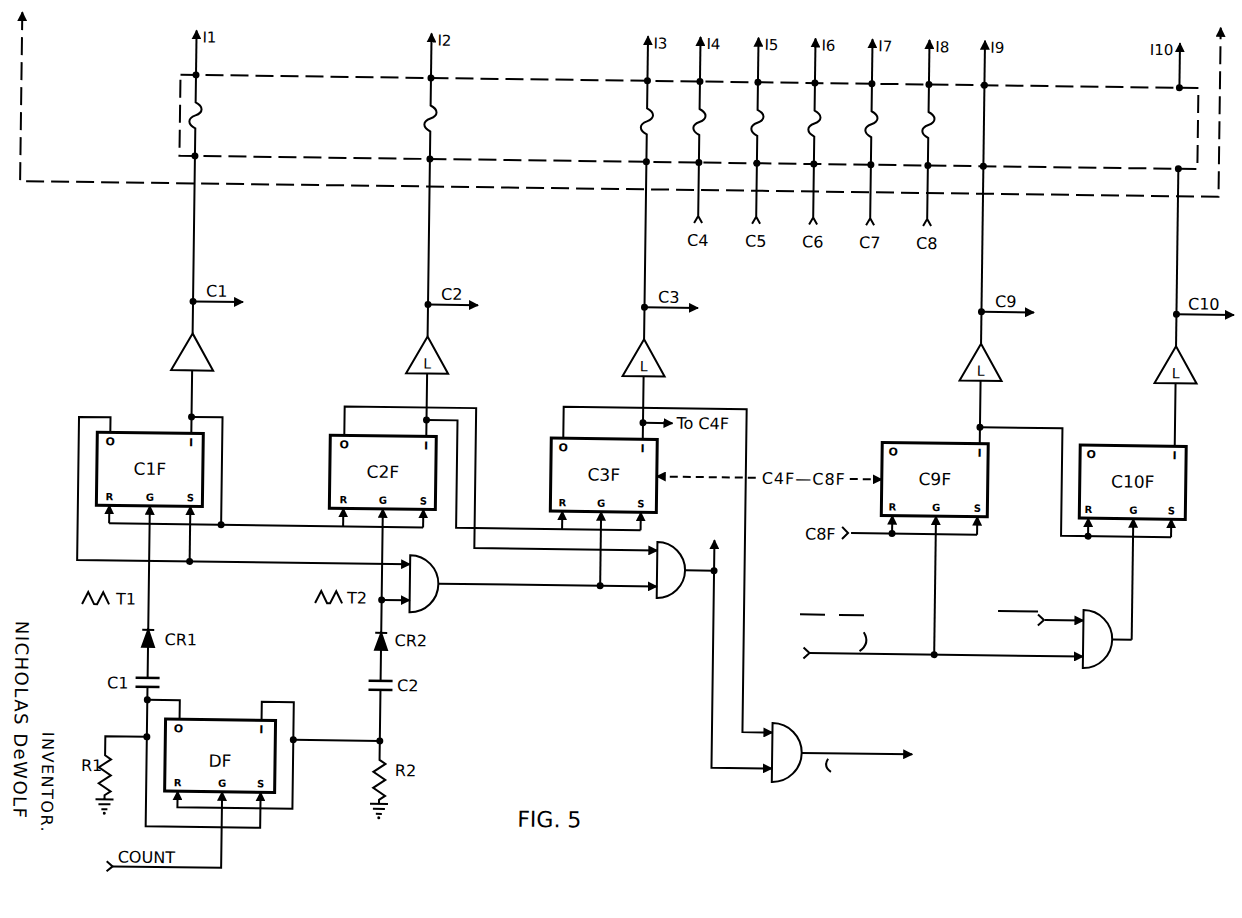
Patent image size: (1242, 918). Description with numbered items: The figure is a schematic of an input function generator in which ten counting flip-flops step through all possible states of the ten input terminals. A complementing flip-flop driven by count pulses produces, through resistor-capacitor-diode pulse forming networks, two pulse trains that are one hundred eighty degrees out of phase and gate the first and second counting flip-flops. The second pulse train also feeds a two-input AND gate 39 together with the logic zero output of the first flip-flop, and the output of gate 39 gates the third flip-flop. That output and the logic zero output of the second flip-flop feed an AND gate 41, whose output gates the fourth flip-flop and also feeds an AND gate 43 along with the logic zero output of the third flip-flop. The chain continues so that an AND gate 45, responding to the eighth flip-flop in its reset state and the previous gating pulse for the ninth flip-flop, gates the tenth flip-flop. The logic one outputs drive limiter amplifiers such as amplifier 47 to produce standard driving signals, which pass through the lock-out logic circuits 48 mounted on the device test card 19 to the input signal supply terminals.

The device test card 19 is at (127, 192).
The limiter amplifier 47 is at (211, 362).
The lock-out logic circuits 48 is at (1051, 162).
The AND gate 39 is at (431, 606).
The AND gate 41 is at (672, 597).
The AND gate 43 is at (786, 781).
The AND gate 45 is at (1104, 659).